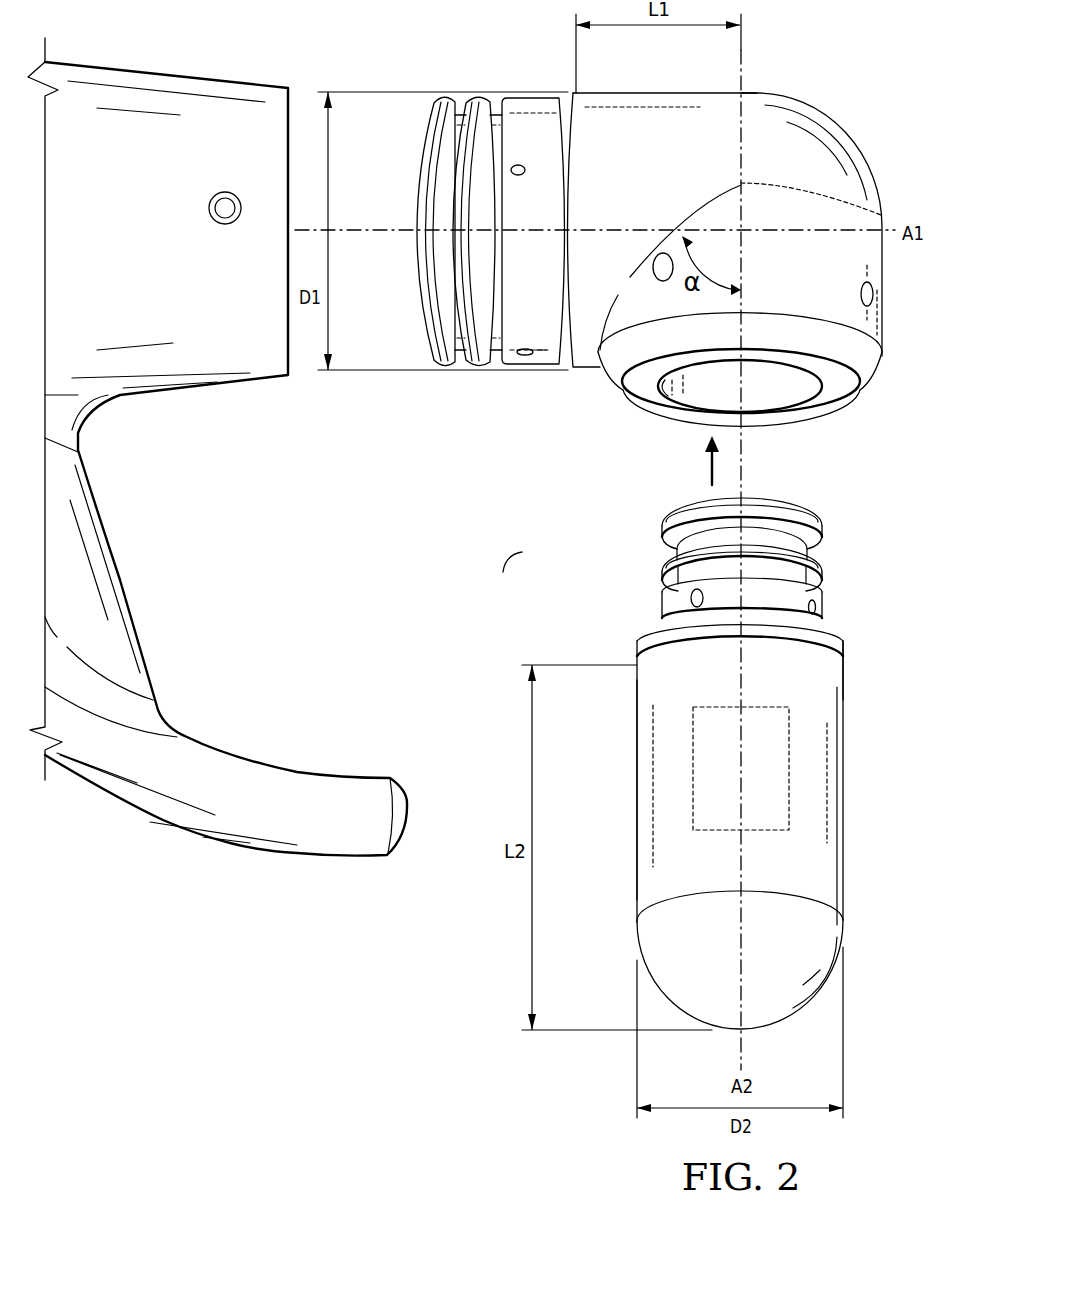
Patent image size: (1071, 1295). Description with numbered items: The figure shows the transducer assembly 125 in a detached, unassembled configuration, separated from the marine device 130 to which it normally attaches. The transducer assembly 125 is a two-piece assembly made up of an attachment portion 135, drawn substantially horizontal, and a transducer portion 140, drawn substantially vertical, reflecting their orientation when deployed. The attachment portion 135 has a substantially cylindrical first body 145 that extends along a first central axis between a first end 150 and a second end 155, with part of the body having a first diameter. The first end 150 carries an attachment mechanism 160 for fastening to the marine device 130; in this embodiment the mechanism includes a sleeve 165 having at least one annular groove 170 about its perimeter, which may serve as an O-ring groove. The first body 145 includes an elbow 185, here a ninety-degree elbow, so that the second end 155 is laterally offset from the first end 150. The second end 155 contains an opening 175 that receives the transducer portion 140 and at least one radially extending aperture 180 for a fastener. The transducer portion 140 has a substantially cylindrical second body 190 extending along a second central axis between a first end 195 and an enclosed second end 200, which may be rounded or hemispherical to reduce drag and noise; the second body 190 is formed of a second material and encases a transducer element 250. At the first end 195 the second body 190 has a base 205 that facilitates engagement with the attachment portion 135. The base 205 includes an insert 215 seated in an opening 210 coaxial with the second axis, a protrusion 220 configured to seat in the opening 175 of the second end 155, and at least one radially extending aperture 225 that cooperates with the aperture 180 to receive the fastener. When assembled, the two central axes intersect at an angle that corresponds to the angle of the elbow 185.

The transducer assembly 125 is at (531, 546).
The marine device 130 is at (138, 62).
The attachment portion 135 is at (641, 90).
The transducer portion 140 is at (638, 868).
The first body 145 is at (686, 93).
The first end 150 is at (578, 370).
The second end 155 is at (850, 397).
The attachment mechanism 160 is at (418, 141).
The sleeve 165 is at (492, 196).
The annular groove 170 is at (443, 210).
The opening 175 is at (665, 395).
The radially extending aperture 180 is at (870, 294).
The elbow 185 is at (837, 138).
The second body 190 is at (847, 792).
The first end 195 is at (845, 660).
The second end 200 is at (758, 1032).
The base 205 is at (637, 658).
The opening 210 is at (676, 619).
The insert 215 is at (826, 566).
The protrusion 220 is at (783, 497).
The radially extending aperture 225 is at (825, 608).
The transducer element 250 is at (722, 706).